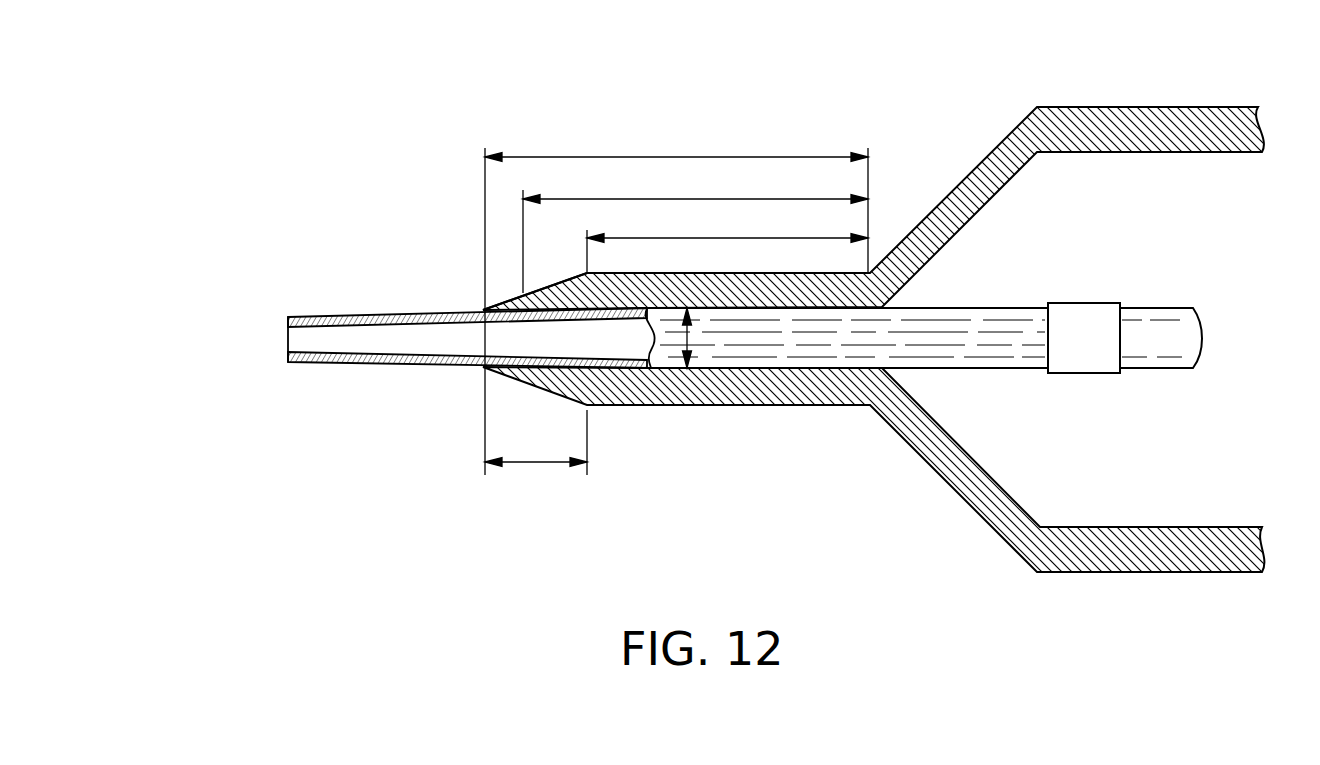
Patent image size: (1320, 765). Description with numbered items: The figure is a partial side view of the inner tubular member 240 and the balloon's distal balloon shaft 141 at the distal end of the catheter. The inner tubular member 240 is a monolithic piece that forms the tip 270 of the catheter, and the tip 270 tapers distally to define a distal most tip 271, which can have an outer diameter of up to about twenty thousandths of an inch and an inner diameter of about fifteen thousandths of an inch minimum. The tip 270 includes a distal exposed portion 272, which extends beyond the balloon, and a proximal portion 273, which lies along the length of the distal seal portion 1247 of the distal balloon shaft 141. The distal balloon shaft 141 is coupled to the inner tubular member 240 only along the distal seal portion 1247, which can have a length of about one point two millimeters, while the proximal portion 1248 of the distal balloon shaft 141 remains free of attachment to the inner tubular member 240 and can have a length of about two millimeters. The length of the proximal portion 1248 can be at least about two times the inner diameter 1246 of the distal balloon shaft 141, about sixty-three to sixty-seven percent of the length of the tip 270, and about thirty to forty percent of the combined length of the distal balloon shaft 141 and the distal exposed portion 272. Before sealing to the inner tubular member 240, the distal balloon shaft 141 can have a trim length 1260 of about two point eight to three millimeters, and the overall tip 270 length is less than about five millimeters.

The distal balloon shaft 141 is at (556, 157).
The trim length 1260 is at (625, 199).
The proximal portion of the distal balloon shaft 1248 is at (806, 238).
The distal seal portion 1247 is at (538, 463).
The inner diameter of the distal balloon shaft 1246 is at (687, 338).
The monolithic inner tubular member 240 is at (957, 307).
The tip 270 is at (405, 366).
The distal most tip 271 is at (286, 317).
The distal exposed portion 272 is at (386, 310).
The proximal portion of the tip 273 is at (523, 294).